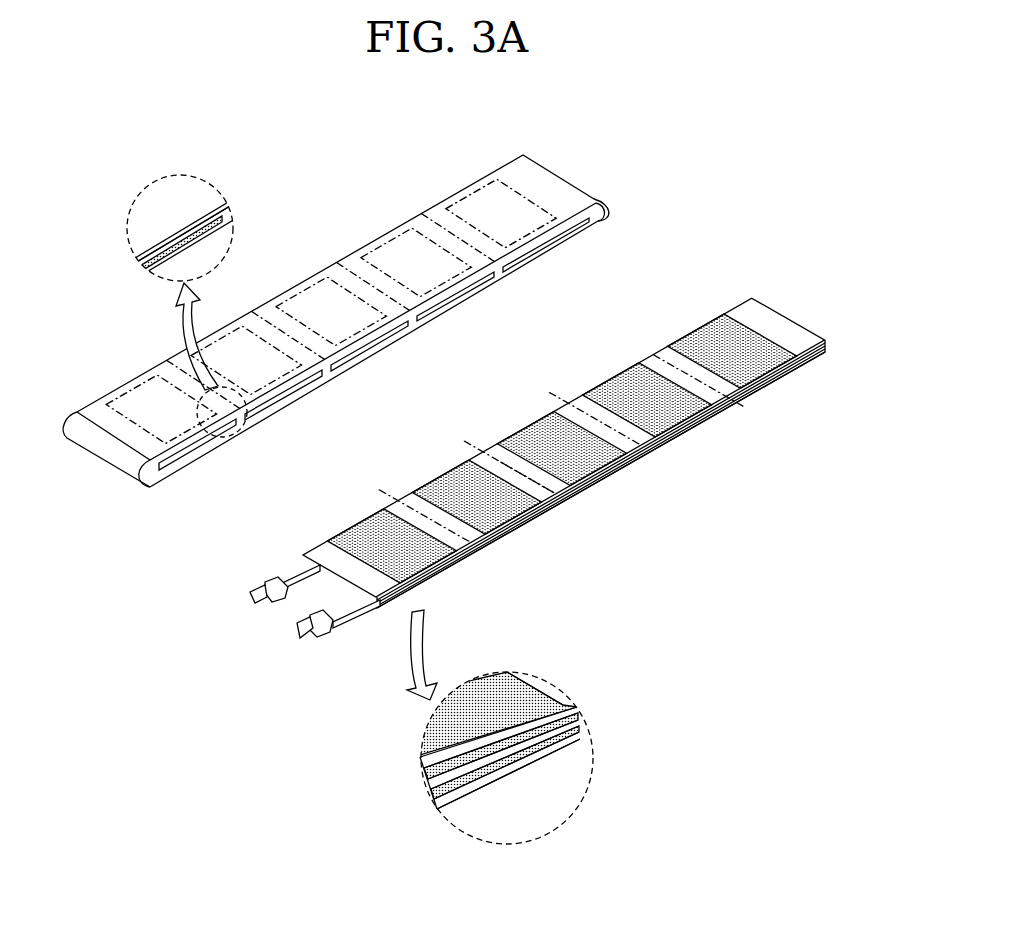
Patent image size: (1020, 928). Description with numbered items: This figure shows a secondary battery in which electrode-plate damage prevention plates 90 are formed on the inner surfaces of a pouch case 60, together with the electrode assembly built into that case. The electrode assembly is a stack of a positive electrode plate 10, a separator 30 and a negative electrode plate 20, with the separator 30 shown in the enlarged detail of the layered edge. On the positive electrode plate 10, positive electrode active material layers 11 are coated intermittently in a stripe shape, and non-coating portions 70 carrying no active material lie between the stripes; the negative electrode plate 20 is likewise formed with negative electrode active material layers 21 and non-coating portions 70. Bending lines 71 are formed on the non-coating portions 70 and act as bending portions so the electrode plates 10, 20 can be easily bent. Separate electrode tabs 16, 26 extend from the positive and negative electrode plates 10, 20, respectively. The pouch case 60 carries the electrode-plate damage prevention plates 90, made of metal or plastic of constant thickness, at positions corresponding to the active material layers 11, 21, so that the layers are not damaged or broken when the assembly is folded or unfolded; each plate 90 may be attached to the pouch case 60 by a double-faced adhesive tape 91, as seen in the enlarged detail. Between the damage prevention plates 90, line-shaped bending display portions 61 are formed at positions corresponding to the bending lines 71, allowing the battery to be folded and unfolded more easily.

The positive electrode plate 10 is at (333, 493).
The positive electrode active material layer 11 is at (360, 528).
The electrode tab 16 is at (263, 612).
The negative electrode plate 20 is at (490, 555).
The negative electrode active material layer 21 is at (590, 487).
The electrode tab 26 is at (315, 647).
The separator 30 is at (450, 797).
The pouch case 60 is at (200, 217).
The bending display portion 61 is at (462, 237).
The non-coating portion 70 is at (383, 475).
The bending line 71 is at (517, 470).
The electrode-plate damage prevention plate 90 is at (215, 233).
The double-faced adhesive tape 91 is at (217, 213).